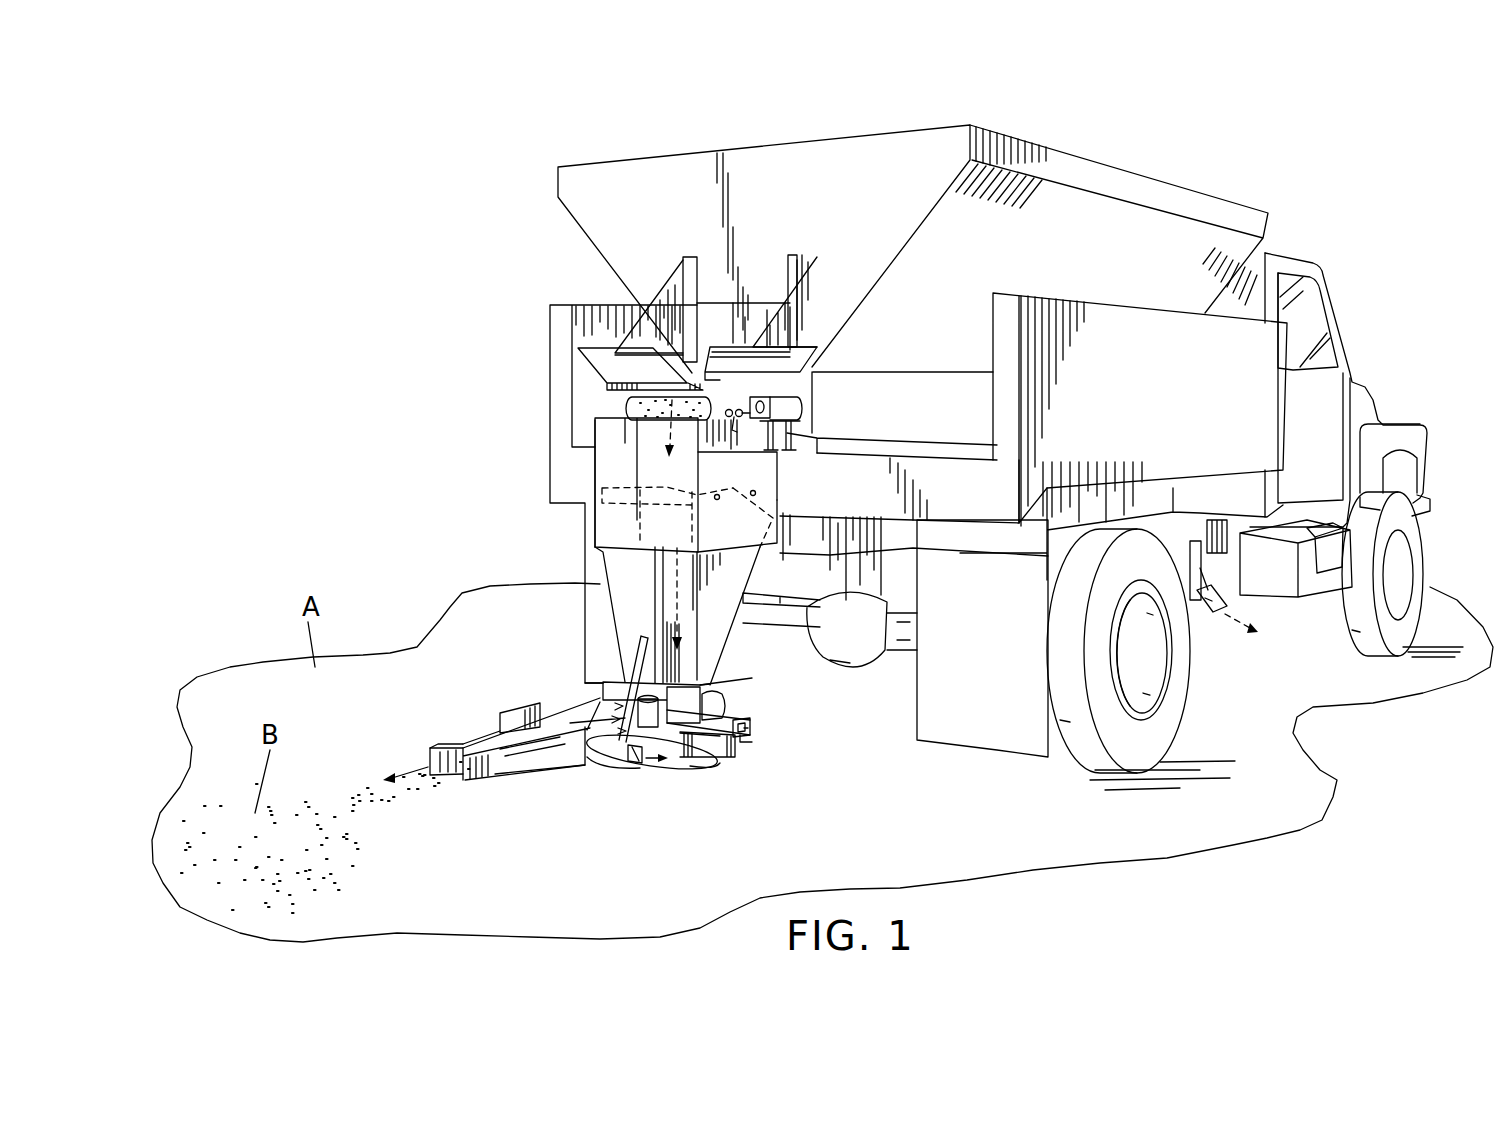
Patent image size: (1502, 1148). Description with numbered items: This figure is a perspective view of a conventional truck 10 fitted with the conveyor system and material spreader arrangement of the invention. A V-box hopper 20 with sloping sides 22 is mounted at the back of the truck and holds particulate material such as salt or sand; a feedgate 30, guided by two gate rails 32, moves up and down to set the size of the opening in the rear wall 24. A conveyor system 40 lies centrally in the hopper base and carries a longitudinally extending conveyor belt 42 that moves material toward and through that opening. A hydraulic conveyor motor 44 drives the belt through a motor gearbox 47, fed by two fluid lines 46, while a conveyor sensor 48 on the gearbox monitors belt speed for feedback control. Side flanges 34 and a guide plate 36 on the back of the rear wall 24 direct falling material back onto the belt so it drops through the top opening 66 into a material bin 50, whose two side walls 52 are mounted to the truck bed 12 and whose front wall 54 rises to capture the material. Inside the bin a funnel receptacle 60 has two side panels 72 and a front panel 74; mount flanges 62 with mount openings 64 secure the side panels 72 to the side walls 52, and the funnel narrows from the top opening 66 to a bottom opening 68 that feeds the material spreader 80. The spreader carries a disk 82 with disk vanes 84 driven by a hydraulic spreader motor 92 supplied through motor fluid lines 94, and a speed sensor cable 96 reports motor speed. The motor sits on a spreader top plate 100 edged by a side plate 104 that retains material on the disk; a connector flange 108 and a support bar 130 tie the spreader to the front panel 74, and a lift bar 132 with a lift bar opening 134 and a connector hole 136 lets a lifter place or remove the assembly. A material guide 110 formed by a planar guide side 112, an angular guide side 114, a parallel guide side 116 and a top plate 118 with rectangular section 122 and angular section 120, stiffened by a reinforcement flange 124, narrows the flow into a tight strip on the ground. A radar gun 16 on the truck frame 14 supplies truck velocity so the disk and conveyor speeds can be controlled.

The truck 10 is at (1320, 187).
The truck bed 12 is at (980, 450).
The truck frame 14 is at (1227, 523).
The radar gun 16 is at (1210, 612).
The hopper 20 is at (1151, 182).
The sides 22 is at (1153, 282).
The rear wall 24 is at (622, 180).
The feedgate 30 is at (715, 310).
The gate rails 32 is at (690, 260).
The side flanges 34 is at (665, 302).
The guide plate 36 is at (645, 362).
The conveyor system 40 is at (905, 388).
The conveyor belt 42 is at (640, 398).
The conveyor motor 44 is at (798, 410).
The fluid lines 46 is at (790, 444).
The motor gearbox 47 is at (760, 398).
The conveyor sensor 48 is at (733, 407).
The material bin 50 is at (594, 461).
The side walls 52 is at (595, 478).
The front wall 54 is at (605, 427).
The funnel receptacle 60 is at (608, 595).
The mount flange 62 is at (778, 517).
The mount openings 64 is at (756, 493).
The top opening 66 is at (662, 497).
The bottom opening 68 is at (728, 697).
The side panels 72 is at (733, 577).
The front panel 74 is at (620, 574).
The material spreader 80 is at (608, 790).
The disk 82 is at (603, 757).
The disk vanes 84 is at (631, 767).
The spreader motor 92 is at (672, 681).
The motor fluid lines 94 is at (620, 716).
The speed sensor cable 96 is at (650, 748).
The spreader top plate 100 is at (665, 742).
The side plate 104 is at (703, 758).
The connector flange 108 is at (675, 683).
The material guide 110 is at (471, 724).
The planar guide side 112 is at (432, 757).
The angular guide side 114 is at (520, 768).
The parallel guide side 116 is at (480, 778).
The top plate 118 is at (463, 742).
The angular section 120 is at (535, 737).
The rectangular section 122 is at (460, 745).
The reinforcement flange 124 is at (517, 716).
The support bar 130 is at (633, 643).
The lift bar 132 is at (751, 724).
The lift bar opening 134 is at (750, 735).
The connector hole 136 is at (725, 737).